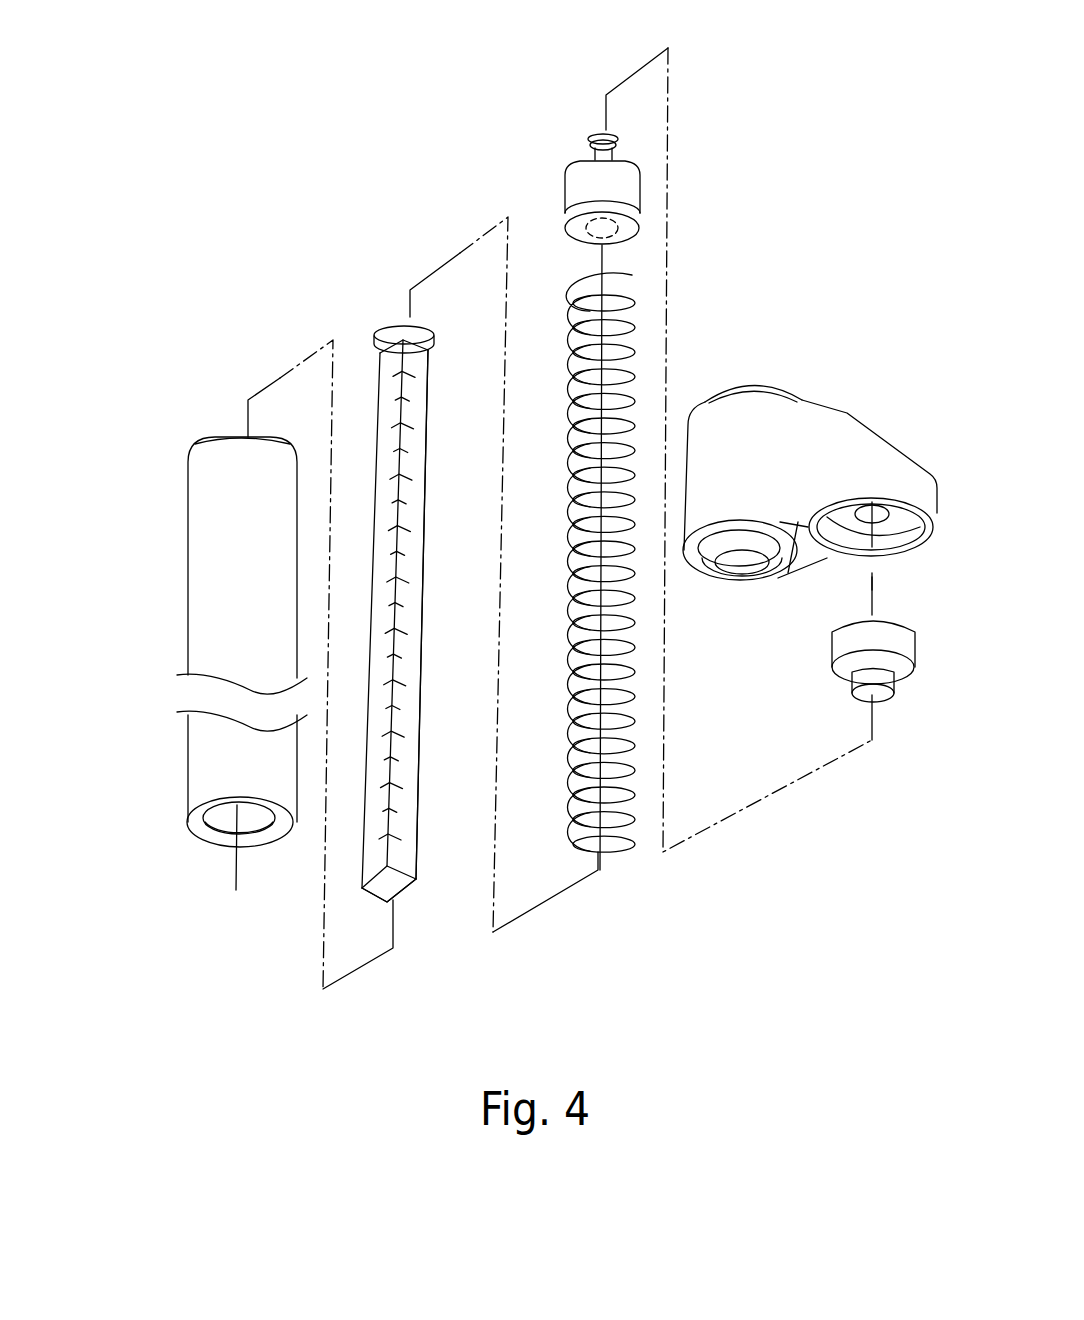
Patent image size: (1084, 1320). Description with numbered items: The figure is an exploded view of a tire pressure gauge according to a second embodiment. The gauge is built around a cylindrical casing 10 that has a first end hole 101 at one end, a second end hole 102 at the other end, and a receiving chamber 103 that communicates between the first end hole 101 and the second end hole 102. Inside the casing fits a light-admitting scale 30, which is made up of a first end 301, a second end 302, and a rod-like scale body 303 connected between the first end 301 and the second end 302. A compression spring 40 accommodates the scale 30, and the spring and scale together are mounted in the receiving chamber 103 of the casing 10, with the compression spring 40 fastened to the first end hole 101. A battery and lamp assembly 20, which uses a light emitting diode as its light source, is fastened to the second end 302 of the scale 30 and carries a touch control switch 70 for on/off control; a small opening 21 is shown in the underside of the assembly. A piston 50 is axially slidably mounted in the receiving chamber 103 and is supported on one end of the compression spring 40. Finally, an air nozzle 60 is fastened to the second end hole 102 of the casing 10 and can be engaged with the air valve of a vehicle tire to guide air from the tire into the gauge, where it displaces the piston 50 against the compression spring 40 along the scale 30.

The cylindrical casing 10 is at (158, 612).
The first end hole 101 is at (184, 821).
The second end hole 102 is at (200, 445).
The receiving chamber 103 is at (222, 822).
The battery and lamp assembly 20 is at (632, 160).
The hole in cap 21 is at (641, 234).
The touch control switch 70 is at (638, 185).
The scale 30 is at (447, 474).
The first end 301 is at (400, 882).
The second end 302 is at (400, 326).
The rod-like scale body 303 is at (427, 604).
The compression spring 40 is at (604, 852).
The piston 50 is at (918, 645).
The air nozzle 60 is at (768, 366).